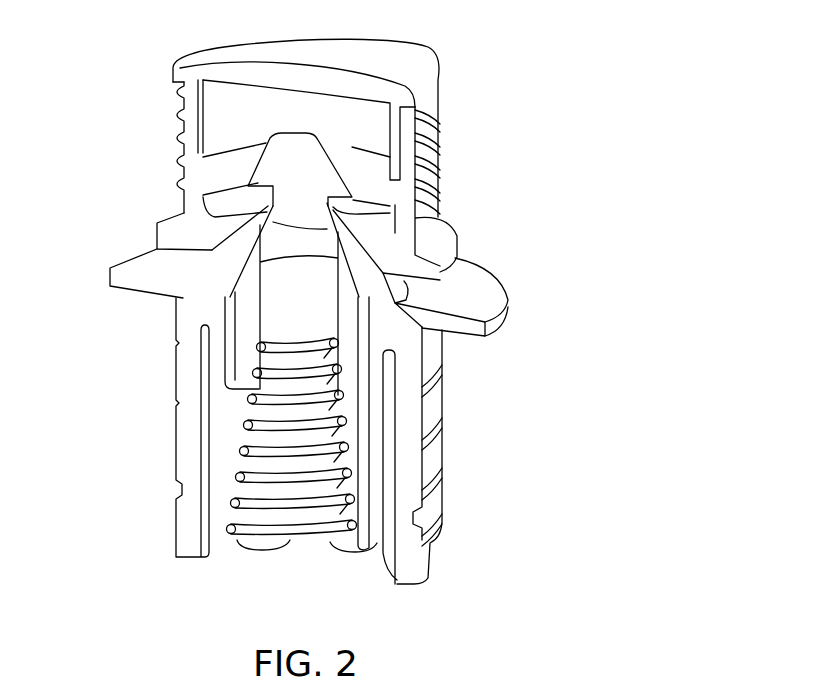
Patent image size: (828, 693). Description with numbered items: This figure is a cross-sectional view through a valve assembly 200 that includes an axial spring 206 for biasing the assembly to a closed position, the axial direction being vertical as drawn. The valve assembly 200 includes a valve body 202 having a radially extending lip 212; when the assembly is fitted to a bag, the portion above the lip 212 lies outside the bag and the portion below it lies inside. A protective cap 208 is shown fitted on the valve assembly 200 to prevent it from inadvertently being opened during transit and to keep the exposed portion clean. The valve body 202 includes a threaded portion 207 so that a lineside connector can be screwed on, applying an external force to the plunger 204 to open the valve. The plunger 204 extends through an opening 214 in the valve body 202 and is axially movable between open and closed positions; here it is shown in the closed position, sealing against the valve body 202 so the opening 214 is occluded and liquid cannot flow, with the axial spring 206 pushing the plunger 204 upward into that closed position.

The valve assembly 200 is at (512, 120).
The valve body 202 is at (442, 440).
The plunger 204 is at (270, 173).
The axial spring 206 is at (305, 515).
The threaded portion 207 is at (173, 142).
The protective cap 208 is at (403, 63).
The radially extending lip 212 is at (503, 277).
The opening 214 is at (241, 237).